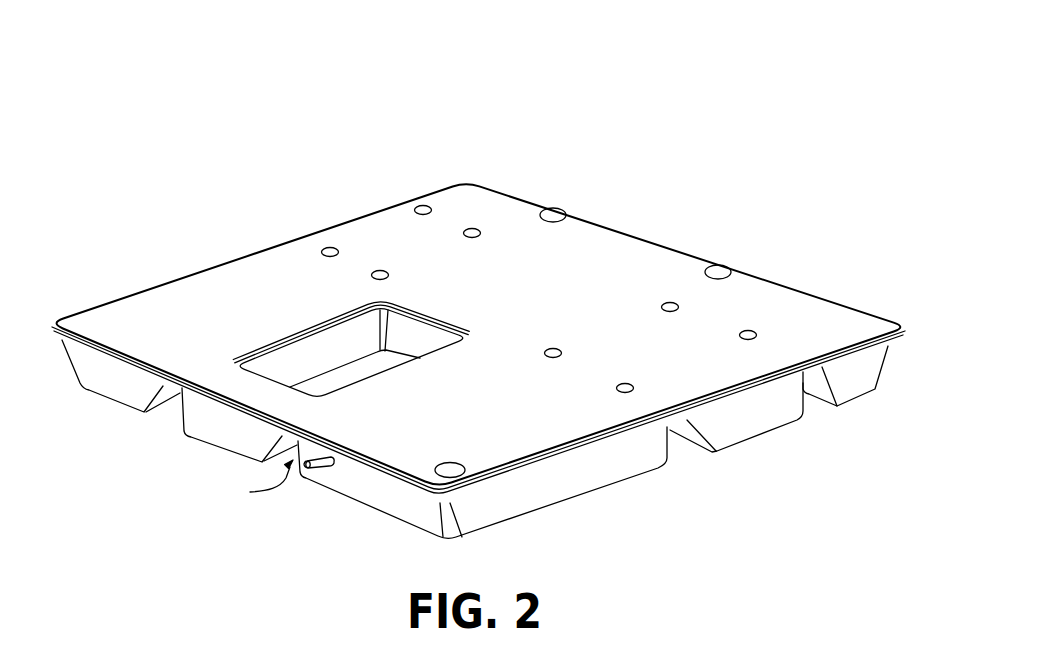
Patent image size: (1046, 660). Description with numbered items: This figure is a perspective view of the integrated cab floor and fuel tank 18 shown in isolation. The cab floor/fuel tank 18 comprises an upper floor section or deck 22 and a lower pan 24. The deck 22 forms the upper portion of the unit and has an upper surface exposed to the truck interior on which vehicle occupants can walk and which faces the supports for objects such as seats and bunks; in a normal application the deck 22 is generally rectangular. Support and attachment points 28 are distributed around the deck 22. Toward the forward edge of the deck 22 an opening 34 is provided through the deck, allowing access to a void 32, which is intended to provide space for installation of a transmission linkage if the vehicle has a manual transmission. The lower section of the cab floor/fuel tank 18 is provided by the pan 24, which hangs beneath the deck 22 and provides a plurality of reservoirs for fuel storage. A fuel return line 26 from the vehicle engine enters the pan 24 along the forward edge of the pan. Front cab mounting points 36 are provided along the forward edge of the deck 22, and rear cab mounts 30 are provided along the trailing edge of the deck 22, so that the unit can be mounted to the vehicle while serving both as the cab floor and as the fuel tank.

The integrated cab floor and fuel tank 18 is at (613, 131).
The deck 22 is at (647, 250).
The pan 24 is at (767, 420).
The fuel return line 26 is at (313, 467).
The support and attachment points 28 is at (463, 233).
The rear cab mounts 30 is at (567, 213).
The void 32 is at (355, 378).
The opening 34 is at (326, 340).
The front cab mounting points 36 is at (174, 417).